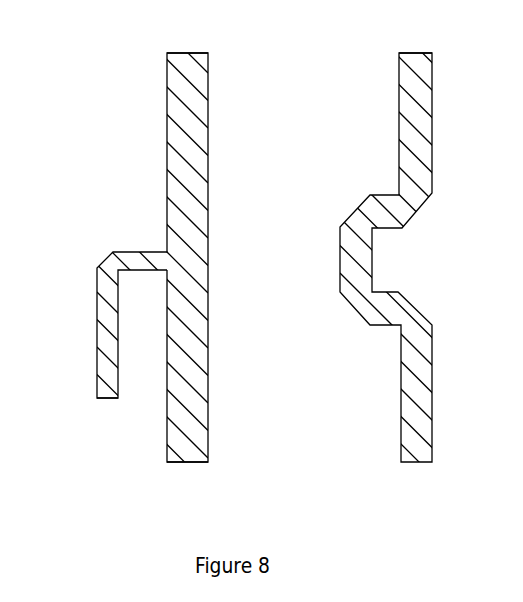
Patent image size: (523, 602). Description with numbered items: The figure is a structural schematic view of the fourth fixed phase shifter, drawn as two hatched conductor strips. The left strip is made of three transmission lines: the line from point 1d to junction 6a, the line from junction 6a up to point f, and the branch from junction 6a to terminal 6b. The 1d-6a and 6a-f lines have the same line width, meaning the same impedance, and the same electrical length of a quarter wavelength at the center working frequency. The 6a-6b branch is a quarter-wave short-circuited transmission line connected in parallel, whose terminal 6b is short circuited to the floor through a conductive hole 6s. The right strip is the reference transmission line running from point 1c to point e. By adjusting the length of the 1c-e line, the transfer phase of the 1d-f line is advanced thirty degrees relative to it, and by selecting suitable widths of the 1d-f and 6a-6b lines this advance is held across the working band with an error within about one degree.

The junction point of the fourth fixed phase shifter 6a is at (172, 284).
The terminal of the short-circuited transmission line 6b is at (151, 284).
The conductive hole 6s is at (100, 392).
The starting point of the 1c-e transmission line 1c is at (388, 279).
The starting point of the 1d-6a transmission line 1d is at (187, 481).
The end point of the 6a-f transmission line f is at (187, 37).
The end point of the 1c-e transmission line e is at (415, 35).